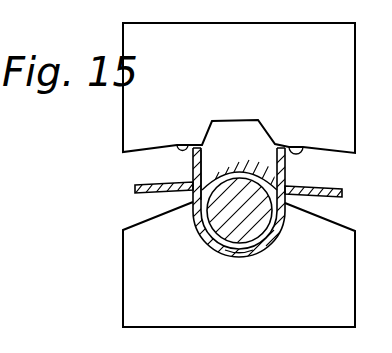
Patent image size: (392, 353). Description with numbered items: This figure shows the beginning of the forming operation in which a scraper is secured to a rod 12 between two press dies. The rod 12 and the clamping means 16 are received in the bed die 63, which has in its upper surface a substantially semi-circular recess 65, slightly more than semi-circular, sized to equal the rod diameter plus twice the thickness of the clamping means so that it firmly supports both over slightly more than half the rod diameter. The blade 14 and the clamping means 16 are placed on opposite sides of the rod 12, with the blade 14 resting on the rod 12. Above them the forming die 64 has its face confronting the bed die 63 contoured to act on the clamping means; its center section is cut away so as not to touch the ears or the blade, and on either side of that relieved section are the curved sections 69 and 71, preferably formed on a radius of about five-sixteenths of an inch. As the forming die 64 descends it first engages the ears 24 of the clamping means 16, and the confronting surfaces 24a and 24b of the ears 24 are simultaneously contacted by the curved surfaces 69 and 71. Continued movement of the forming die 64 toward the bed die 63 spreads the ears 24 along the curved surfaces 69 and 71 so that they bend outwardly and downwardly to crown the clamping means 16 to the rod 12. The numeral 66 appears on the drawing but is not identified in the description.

The rod 12 is at (249, 223).
The blade 14 is at (173, 184).
The clamping means 16 is at (285, 197).
The ears 24 is at (287, 166).
The confronting surface of ear 24a is at (205, 161).
The confronting surface of ear 24b is at (277, 151).
The bed die 63 is at (258, 307).
The forming die 64 is at (262, 63).
The semi-circular recess 65 is at (219, 242).
The die assembly 66 is at (12, 239).
The curved section 69 is at (303, 147).
The curved section 71 is at (182, 143).